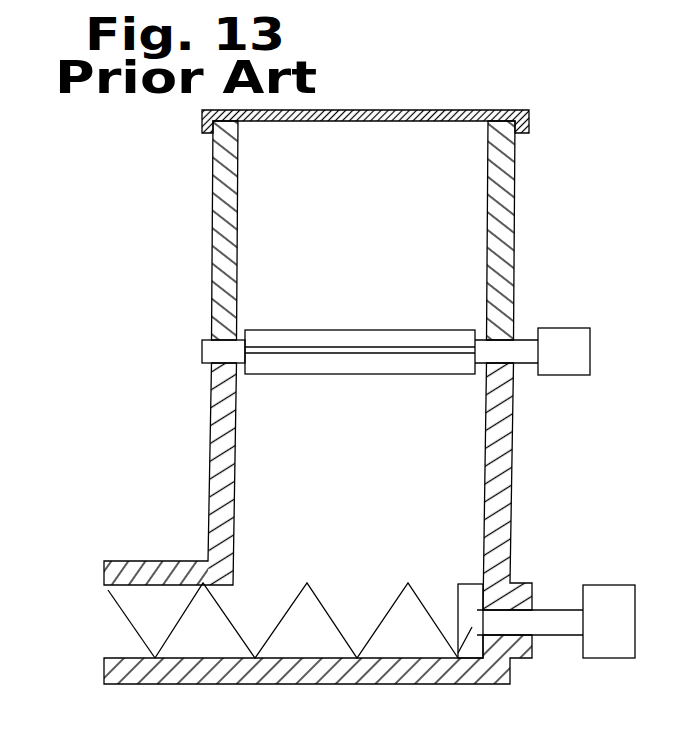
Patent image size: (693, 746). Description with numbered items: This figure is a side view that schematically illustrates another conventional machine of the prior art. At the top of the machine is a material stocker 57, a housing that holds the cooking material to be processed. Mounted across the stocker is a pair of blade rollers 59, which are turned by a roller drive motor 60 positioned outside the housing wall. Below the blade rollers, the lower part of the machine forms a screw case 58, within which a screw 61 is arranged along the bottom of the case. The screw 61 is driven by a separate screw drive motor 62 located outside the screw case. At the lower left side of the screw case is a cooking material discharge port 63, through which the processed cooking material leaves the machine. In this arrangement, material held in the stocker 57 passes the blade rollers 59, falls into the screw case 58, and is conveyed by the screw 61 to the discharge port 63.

The material stocker 57 is at (503, 213).
The screw case 58 is at (495, 488).
The pair of blade rollers 59 is at (450, 337).
The roller drive motor 60 is at (575, 363).
The screw 61 is at (378, 630).
The screw drive motor 62 is at (607, 648).
The cooking material discharge port 63 is at (120, 627).